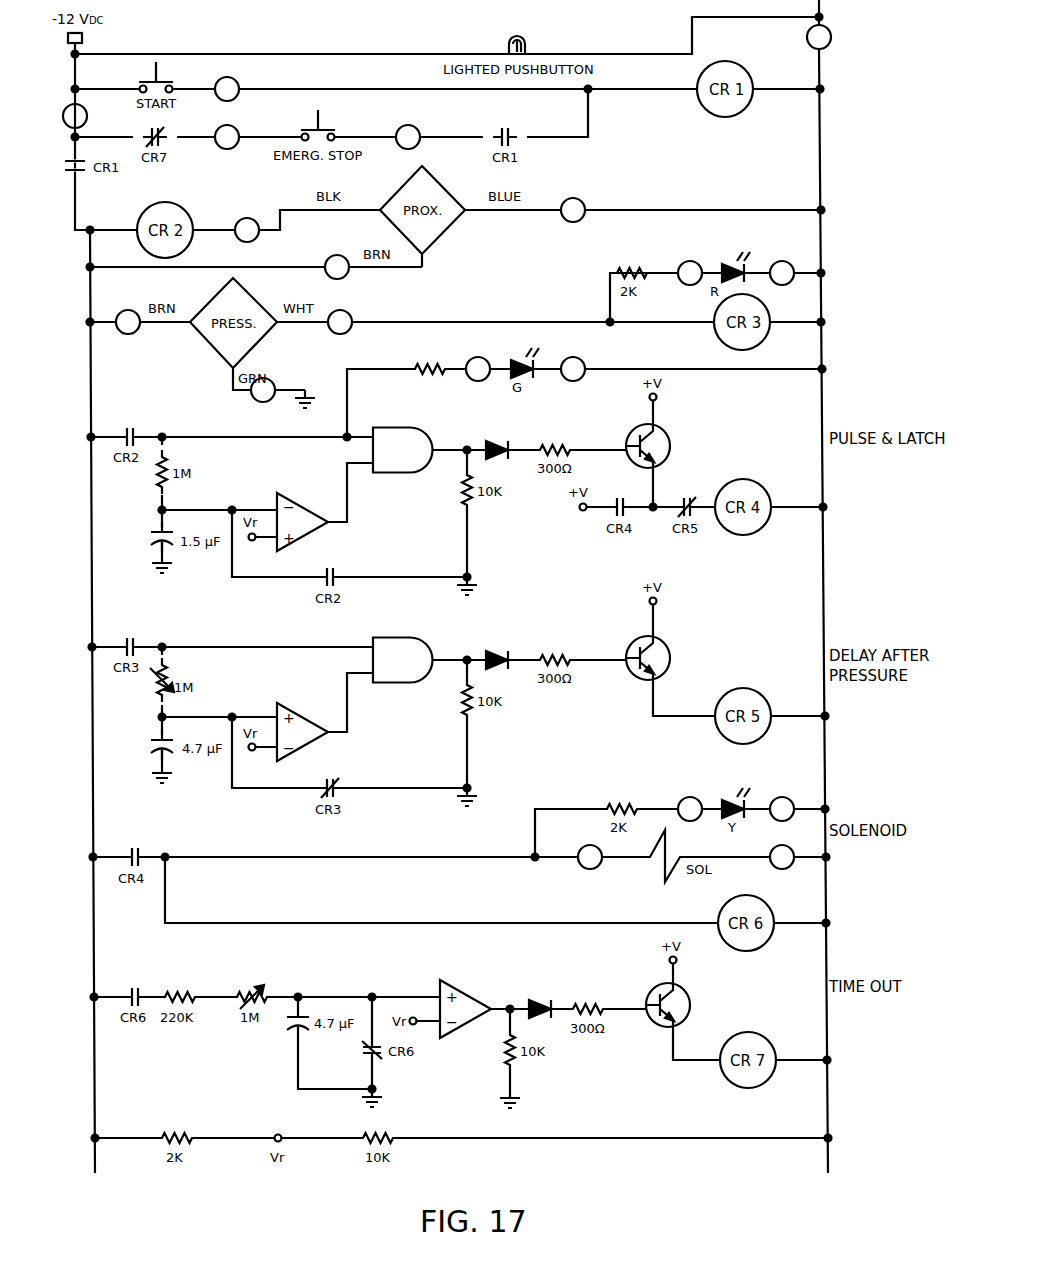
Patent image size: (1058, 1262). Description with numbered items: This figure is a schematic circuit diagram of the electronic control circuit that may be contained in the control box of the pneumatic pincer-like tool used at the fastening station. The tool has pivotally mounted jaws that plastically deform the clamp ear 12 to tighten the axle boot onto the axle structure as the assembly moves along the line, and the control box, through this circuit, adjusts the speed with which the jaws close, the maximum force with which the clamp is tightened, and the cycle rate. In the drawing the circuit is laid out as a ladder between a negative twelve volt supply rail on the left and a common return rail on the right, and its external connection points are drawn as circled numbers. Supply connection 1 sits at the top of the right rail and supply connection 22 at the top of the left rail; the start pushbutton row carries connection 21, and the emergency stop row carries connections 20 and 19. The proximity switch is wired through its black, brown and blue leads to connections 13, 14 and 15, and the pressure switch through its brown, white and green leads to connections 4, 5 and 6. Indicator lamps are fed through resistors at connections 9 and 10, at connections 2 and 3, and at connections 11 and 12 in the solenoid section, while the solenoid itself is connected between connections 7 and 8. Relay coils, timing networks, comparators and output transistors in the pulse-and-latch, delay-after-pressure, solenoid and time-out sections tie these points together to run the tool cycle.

The terminal 1 (+ supply) 1 is at (819, 37).
The terminal 2 (green LED resistor) 2 is at (478, 369).
The terminal 3 (green LED) 3 is at (573, 369).
The terminal 4 (pressure switch brown lead) 4 is at (128, 322).
The terminal 5 (pressure switch white lead) 5 is at (340, 322).
The terminal 6 (pressure switch green lead) 6 is at (263, 390).
The terminal 7 (solenoid) 7 is at (590, 857).
The terminal 8 (solenoid) 8 is at (782, 857).
The terminal 9 (red LED resistor) 9 is at (690, 273).
The terminal 10 (red LED) 10 is at (782, 273).
The terminal 11 (yellow LED resistor) 11 is at (690, 809).
The ear 12 is at (782, 809).
The terminal 13 (proximity switch black lead) 13 is at (247, 230).
The terminal 14 (proximity switch brown lead) 14 is at (337, 267).
The terminal 15 (proximity switch blue lead) 15 is at (573, 210).
The terminal 19 (emergency stop) 19 is at (408, 137).
The terminal 20 (CR7 contact) 20 is at (227, 137).
The terminal 21 (start pushbutton) 21 is at (227, 89).
The terminal 22 (-12 VDC supply) 22 is at (75, 116).